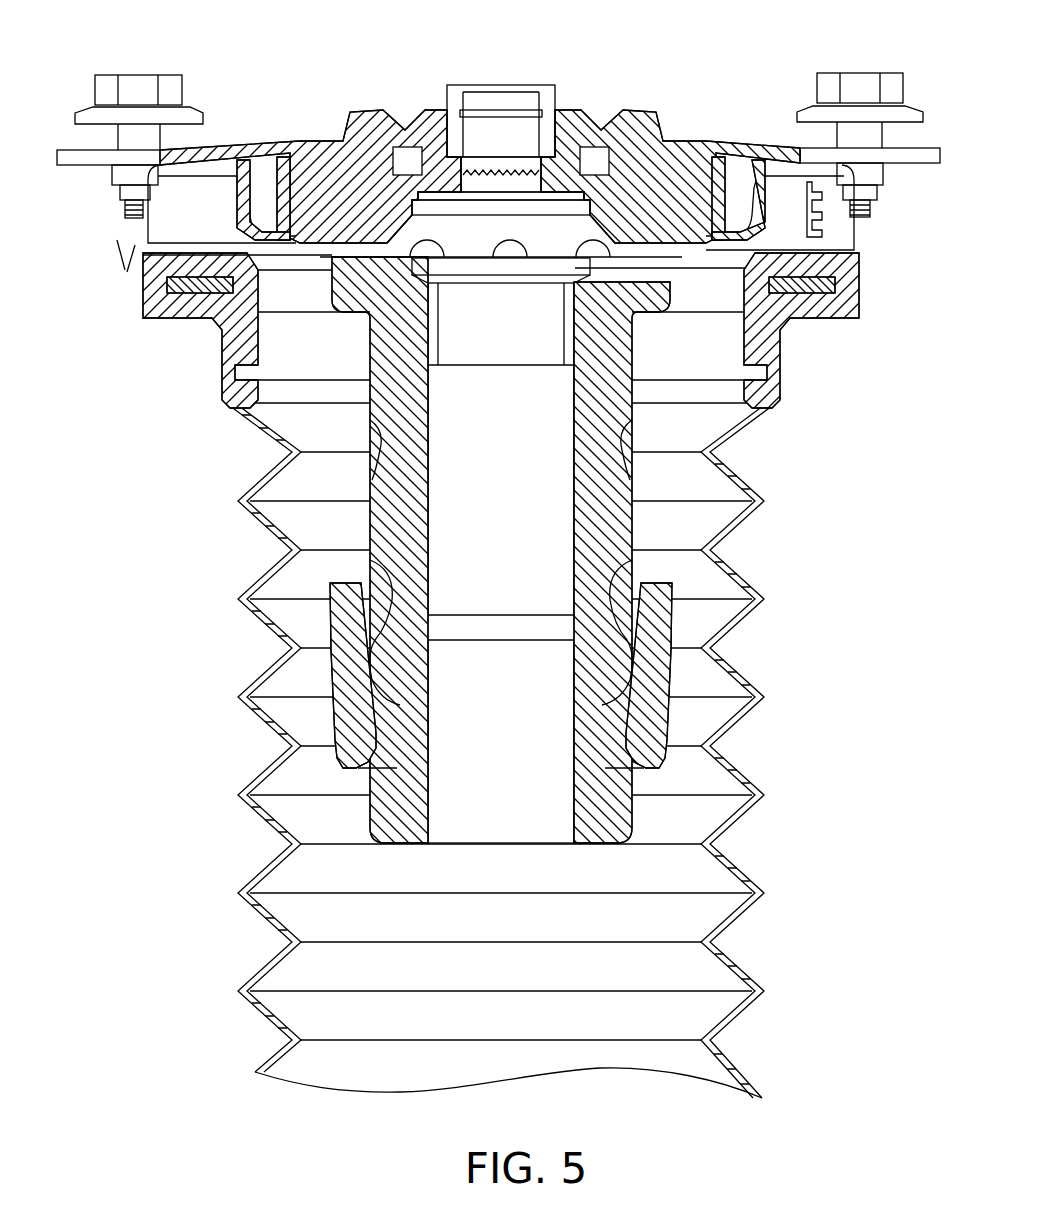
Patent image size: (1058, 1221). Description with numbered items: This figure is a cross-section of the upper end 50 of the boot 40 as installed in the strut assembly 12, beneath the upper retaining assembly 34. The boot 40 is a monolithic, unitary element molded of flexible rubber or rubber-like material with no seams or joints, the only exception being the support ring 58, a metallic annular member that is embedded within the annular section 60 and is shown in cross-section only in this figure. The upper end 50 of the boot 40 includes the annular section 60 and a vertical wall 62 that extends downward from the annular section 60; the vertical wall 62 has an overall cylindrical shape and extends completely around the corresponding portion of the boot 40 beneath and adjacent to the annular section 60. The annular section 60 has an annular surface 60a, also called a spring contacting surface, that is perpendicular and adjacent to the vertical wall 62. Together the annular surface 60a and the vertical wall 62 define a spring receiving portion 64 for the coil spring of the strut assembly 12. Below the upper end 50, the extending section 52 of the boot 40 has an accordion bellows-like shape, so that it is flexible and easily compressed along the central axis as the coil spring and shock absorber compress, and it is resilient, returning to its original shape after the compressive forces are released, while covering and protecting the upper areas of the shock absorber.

The strut assembly 12 is at (757, 43).
The upper retaining assembly 34 is at (254, 160).
The boot 40 is at (752, 664).
The upper end 50 is at (857, 296).
The extending section 52 is at (758, 772).
The support ring 58 is at (805, 288).
The annular section 60 is at (143, 298).
The annular surface 60a is at (163, 320).
The vertical wall 62 is at (223, 363).
The spring receiving portion 64 is at (150, 345).